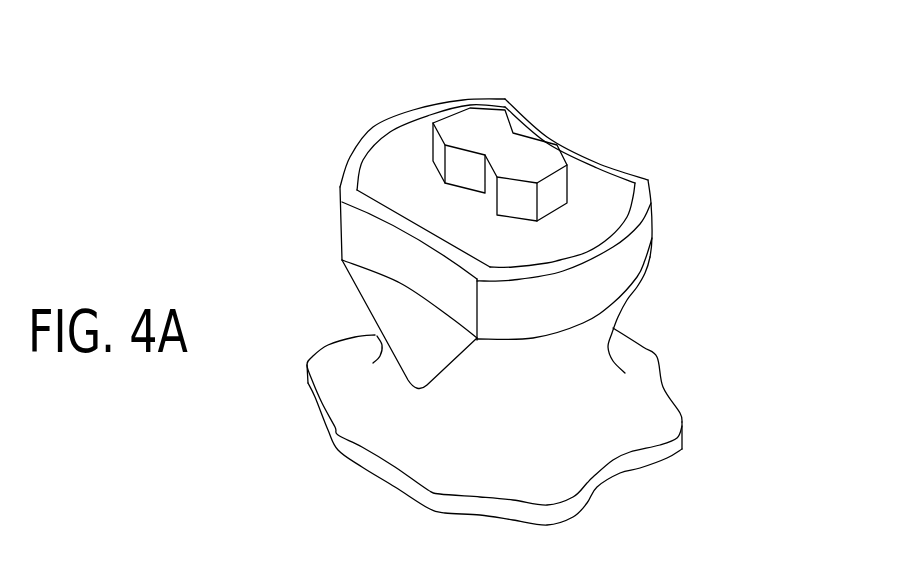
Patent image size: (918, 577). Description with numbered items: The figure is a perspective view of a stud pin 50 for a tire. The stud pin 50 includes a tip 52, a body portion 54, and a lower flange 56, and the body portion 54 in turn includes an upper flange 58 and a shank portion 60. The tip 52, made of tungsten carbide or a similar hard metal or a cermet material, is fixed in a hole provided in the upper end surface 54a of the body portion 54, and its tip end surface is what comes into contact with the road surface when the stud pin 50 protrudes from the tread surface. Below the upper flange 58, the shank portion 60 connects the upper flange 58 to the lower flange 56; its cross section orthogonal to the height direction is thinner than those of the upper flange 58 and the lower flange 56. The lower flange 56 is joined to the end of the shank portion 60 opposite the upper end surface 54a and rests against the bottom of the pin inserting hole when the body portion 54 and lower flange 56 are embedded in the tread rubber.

The stud pin 50 is at (622, 68).
The tip 52 is at (500, 138).
The body portion 54 is at (696, 283).
The upper end surface 54a is at (615, 192).
The lower flange 56 is at (672, 453).
The upper flange 58 is at (640, 252).
The shank portion 60 is at (597, 350).